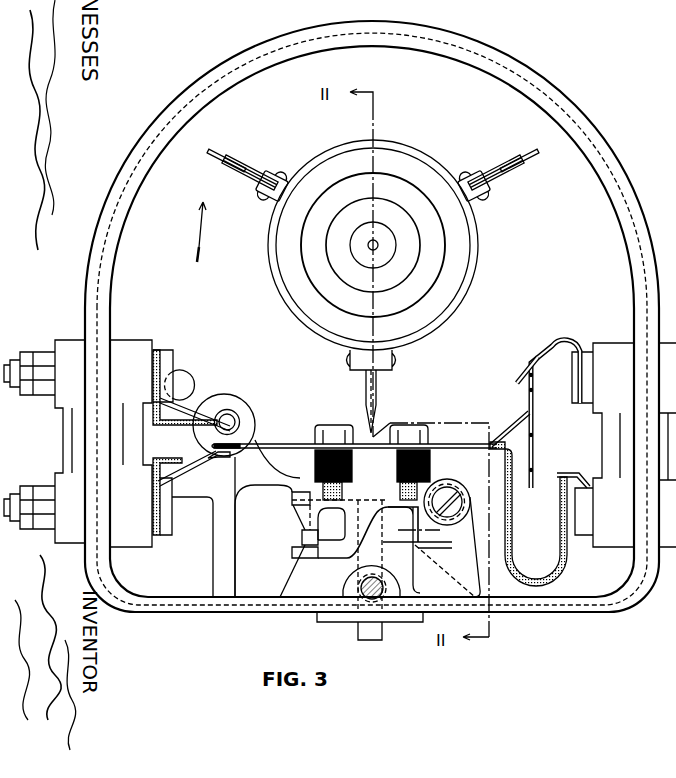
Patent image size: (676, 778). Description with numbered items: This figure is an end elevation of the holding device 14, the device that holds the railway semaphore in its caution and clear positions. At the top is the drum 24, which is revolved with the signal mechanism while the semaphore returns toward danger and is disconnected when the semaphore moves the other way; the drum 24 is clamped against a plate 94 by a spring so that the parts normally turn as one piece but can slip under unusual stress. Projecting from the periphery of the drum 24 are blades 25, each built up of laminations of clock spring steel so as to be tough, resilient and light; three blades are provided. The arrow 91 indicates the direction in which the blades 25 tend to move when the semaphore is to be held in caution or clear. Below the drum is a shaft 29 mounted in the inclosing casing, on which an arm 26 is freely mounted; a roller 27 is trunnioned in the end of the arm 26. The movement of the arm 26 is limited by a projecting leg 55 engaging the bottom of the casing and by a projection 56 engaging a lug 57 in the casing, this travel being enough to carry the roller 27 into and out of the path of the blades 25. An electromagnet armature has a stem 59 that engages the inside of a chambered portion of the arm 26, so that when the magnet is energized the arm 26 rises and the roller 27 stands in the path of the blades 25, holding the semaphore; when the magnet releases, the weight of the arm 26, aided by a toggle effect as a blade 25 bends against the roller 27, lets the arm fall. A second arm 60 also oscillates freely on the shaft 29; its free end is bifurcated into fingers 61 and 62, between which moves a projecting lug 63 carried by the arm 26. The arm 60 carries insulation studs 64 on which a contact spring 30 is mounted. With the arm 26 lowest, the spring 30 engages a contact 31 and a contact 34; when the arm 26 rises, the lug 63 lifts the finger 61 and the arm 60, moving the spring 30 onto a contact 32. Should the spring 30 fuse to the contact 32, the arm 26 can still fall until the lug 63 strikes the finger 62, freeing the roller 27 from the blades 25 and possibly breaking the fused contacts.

The holding device 14 is at (353, 361).
The drum 24 is at (371, 141).
The blades 25 is at (229, 160).
The arm 26 is at (327, 527).
The roller 27 is at (250, 403).
The shaft 29 is at (466, 509).
The contact spring 30 is at (288, 443).
The contact 31 is at (227, 458).
The contact 32 is at (226, 409).
The contact 34 is at (520, 368).
The projecting leg 55 is at (214, 553).
The projection 56 is at (190, 465).
The lug 57 is at (181, 376).
The stem 59 is at (358, 557).
The second arm 60 is at (339, 507).
The finger 61 is at (292, 497).
The finger 62 is at (292, 553).
The projecting lug 63 is at (313, 537).
The insulation studs 64 is at (396, 464).
The arrow 91 is at (197, 240).
The plate 94 is at (482, 255).